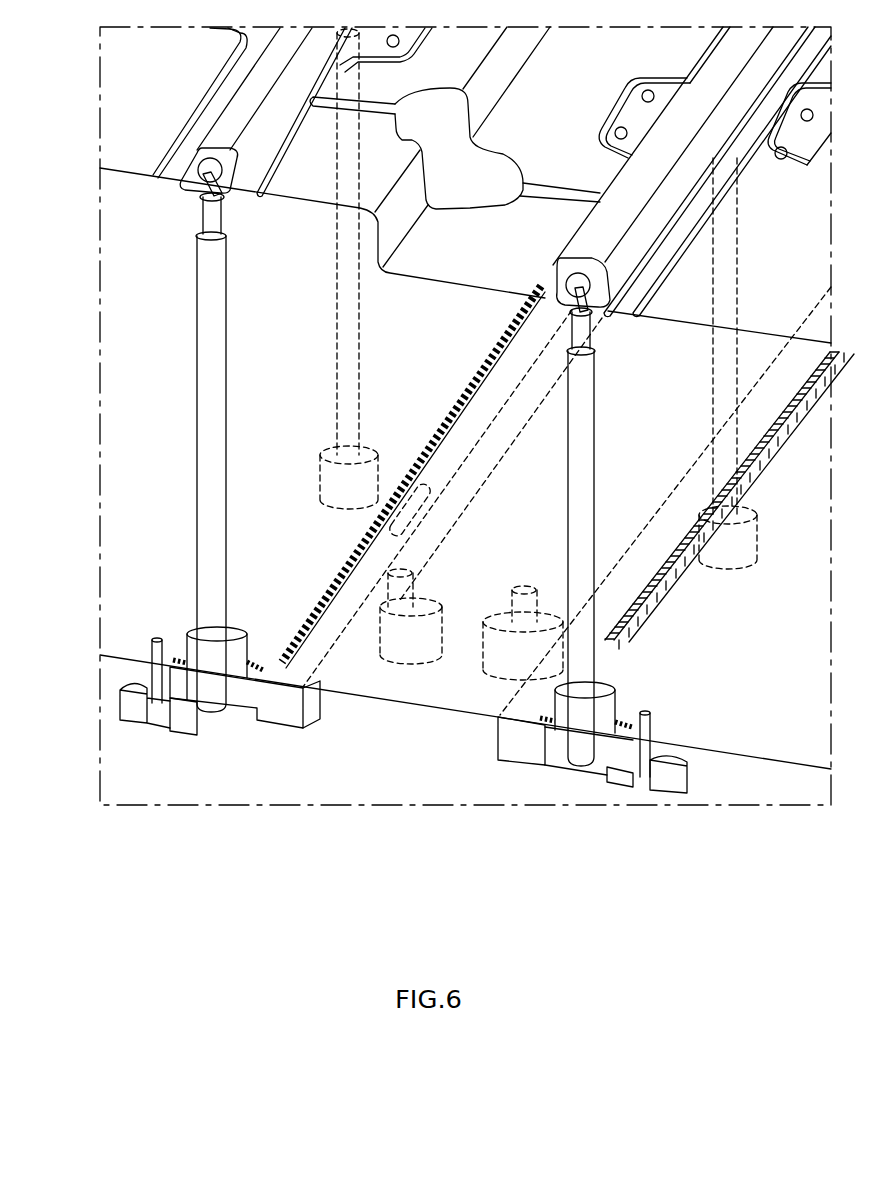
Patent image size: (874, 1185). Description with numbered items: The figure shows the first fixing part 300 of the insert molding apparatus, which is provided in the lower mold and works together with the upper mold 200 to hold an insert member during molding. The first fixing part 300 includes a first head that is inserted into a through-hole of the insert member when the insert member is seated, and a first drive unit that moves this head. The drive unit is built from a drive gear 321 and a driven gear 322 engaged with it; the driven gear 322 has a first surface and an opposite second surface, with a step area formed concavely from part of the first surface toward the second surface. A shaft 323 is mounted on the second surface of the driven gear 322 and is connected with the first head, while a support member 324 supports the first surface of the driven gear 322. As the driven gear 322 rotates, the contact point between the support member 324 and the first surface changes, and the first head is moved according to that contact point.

The upper mold 200 is at (148, 315).
The first fixing part 300 is at (190, 538).
The shaft 323 is at (210, 388).
The support member 324 is at (135, 705).
The driven gear 322 is at (187, 693).
The drive gear 321 is at (283, 716).